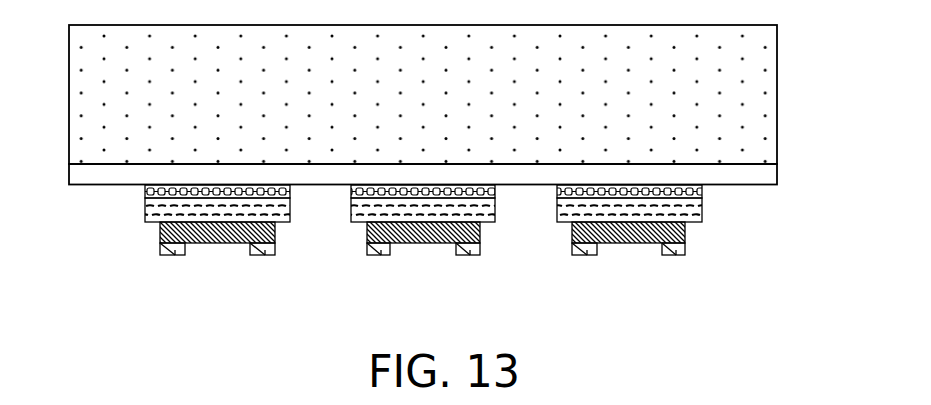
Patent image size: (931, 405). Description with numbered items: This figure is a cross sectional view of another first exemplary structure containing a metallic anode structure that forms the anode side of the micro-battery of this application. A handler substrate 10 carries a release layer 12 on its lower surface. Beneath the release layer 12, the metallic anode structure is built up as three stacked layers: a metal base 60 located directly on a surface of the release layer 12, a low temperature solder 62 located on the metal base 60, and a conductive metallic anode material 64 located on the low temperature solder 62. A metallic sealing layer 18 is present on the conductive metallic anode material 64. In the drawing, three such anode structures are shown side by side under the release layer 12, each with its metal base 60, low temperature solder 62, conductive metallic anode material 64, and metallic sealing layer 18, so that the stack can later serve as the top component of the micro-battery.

The handler substrate 10 is at (764, 71).
The release layer 12 is at (767, 172).
The metallic sealing layer 18 is at (173, 255).
The metal base 60 is at (145, 192).
The low temperature solder 62 is at (145, 211).
The conductive metallic anode material 64 is at (161, 232).